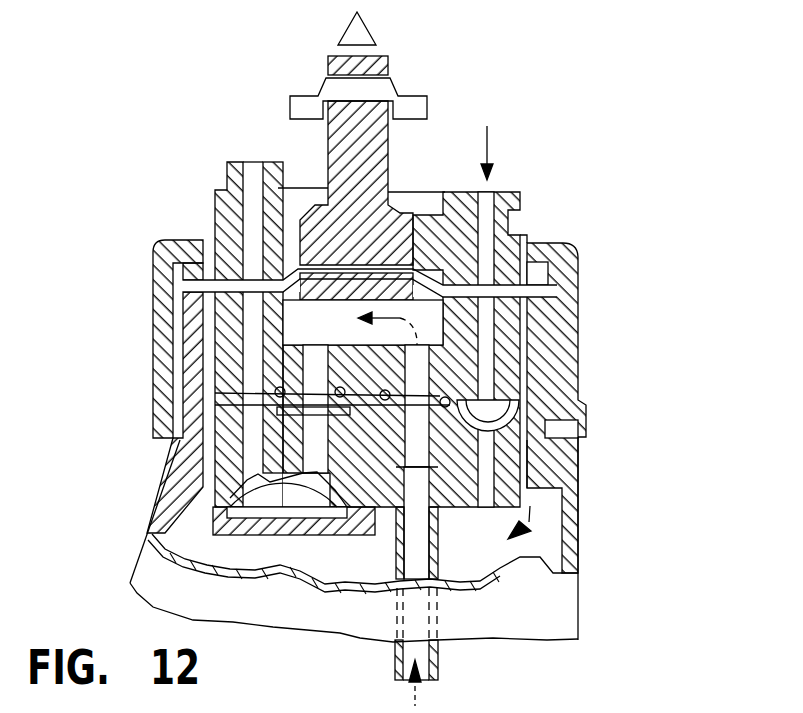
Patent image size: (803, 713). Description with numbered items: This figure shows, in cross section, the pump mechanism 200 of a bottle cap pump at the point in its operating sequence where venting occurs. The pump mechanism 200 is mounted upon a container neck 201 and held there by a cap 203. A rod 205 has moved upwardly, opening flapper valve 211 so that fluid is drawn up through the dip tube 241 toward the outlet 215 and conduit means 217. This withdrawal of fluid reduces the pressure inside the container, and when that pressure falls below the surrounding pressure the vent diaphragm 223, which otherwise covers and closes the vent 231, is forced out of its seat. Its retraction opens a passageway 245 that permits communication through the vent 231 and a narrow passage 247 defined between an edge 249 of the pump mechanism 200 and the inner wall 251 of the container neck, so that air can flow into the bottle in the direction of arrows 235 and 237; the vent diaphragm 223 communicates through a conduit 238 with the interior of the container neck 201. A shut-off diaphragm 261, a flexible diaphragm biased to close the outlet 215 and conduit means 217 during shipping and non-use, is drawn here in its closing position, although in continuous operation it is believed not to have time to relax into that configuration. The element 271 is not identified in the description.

The pump mechanism 200 is at (630, 272).
The container neck 201 is at (148, 522).
The cap 203 is at (160, 240).
The rod 205 is at (392, 176).
The flapper valve 211 is at (606, 353).
The outlet 215 is at (312, 447).
The conduit means 217 is at (440, 396).
The vent diaphragm 223 is at (497, 424).
The vent 231 is at (492, 253).
The arrow 235 is at (487, 148).
The arrow 237 is at (520, 515).
The conduit 238 is at (491, 510).
The dip tube 241 is at (440, 656).
The passageway 245 is at (545, 416).
The narrow passage 247 is at (480, 452).
The edge 249 is at (440, 387).
The inner wall 251 is at (528, 246).
The shut-off diaphragm 261 is at (312, 490).
The membrane / gasket 271 is at (296, 525).